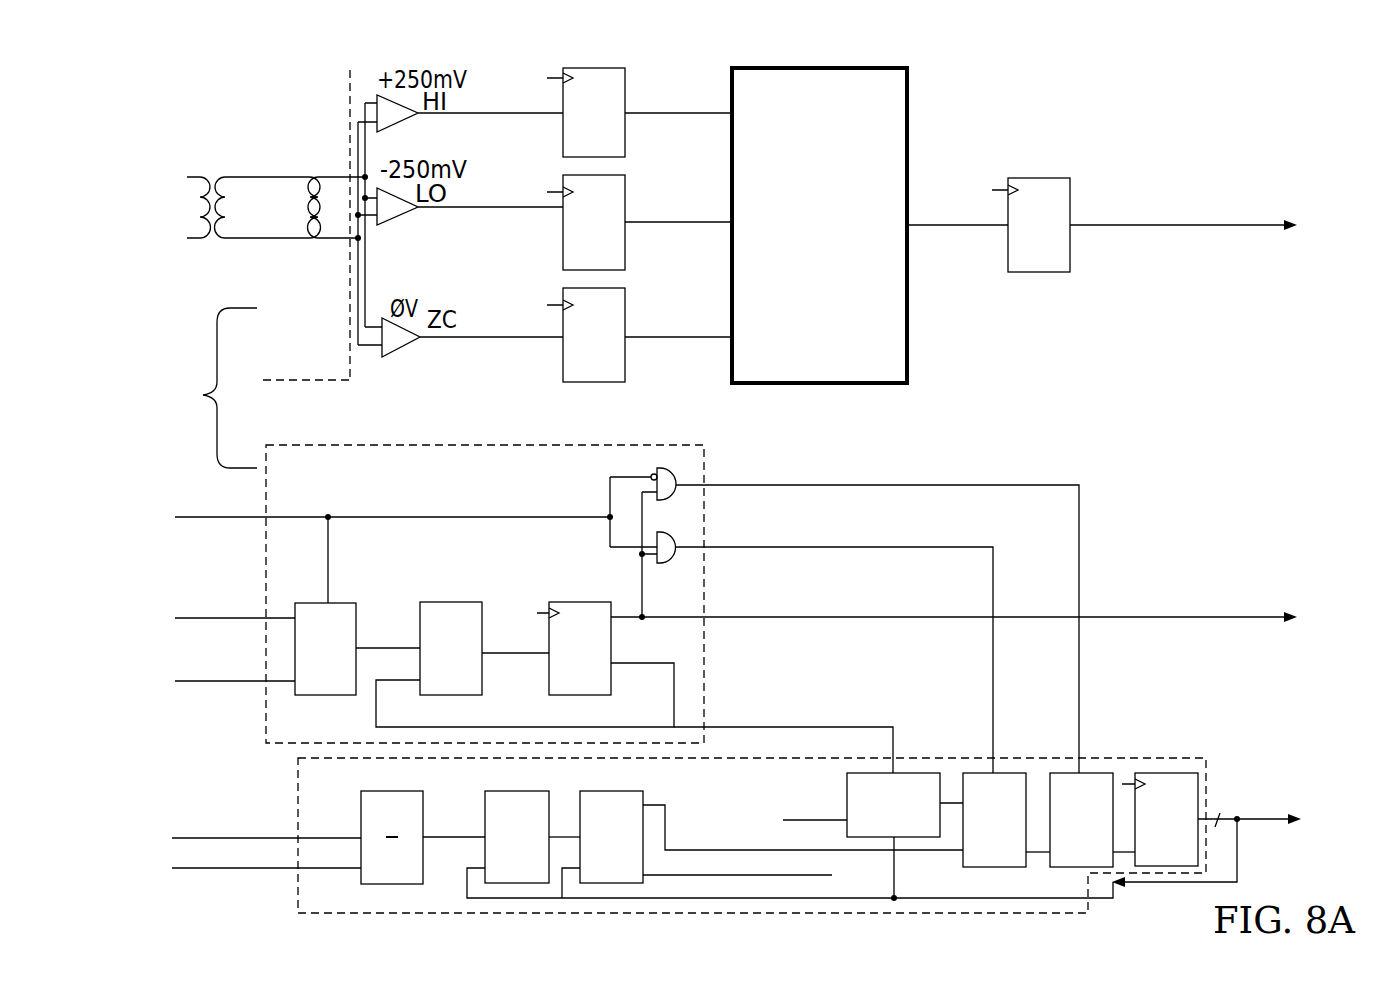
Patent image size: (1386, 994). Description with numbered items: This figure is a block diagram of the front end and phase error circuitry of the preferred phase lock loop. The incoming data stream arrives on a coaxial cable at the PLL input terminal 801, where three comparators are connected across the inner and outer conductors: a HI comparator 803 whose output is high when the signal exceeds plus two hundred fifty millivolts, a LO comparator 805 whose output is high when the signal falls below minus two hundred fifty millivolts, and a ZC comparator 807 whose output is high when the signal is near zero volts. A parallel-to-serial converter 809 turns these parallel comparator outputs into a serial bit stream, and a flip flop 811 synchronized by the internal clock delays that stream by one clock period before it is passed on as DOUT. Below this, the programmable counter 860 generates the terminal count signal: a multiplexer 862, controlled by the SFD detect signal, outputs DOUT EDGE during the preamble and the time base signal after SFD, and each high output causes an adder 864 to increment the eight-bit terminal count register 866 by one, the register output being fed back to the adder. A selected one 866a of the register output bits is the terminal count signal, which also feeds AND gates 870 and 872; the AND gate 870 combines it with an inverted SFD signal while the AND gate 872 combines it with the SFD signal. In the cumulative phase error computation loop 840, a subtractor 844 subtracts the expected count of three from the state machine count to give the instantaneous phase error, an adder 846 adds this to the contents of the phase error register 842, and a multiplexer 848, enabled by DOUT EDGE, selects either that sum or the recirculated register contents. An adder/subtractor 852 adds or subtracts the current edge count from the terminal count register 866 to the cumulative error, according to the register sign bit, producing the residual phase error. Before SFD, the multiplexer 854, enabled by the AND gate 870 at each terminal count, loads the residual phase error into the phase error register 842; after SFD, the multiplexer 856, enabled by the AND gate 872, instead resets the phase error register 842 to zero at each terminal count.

The input terminal 801 is at (331, 167).
The HI comparator 803 is at (622, 77).
The LO comparator 805 is at (648, 176).
The ZC comparator 807 is at (618, 305).
The parallel-to-serial converter 809 is at (904, 87).
The flip flop 811 is at (1063, 185).
The cumulative phase error computation loop 840 is at (297, 766).
The phase error register 842 is at (1135, 777).
The subtractor 844 is at (360, 817).
The adder 846 is at (485, 822).
The multiplexer 848 is at (645, 792).
The adder/subtractor 852 is at (852, 782).
The multiplexer 854 is at (960, 782).
The multiplexer 856 is at (1048, 782).
The programmable counter 860 is at (615, 443).
The multiplexer 862 is at (353, 610).
The adder 864 is at (480, 608).
The terminal count register 866 is at (602, 608).
The counter output bit 866a is at (862, 622).
The AND gate 870 is at (670, 468).
The AND gate 872 is at (670, 532).